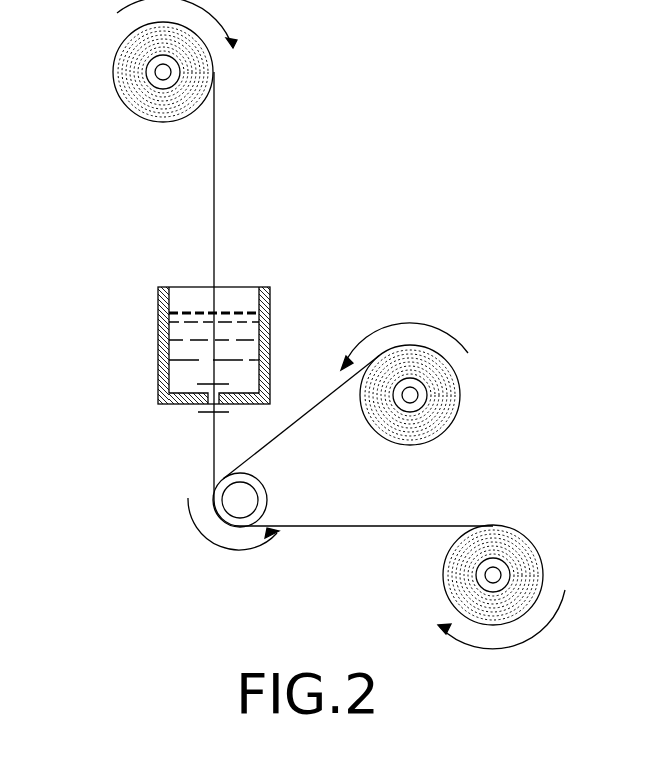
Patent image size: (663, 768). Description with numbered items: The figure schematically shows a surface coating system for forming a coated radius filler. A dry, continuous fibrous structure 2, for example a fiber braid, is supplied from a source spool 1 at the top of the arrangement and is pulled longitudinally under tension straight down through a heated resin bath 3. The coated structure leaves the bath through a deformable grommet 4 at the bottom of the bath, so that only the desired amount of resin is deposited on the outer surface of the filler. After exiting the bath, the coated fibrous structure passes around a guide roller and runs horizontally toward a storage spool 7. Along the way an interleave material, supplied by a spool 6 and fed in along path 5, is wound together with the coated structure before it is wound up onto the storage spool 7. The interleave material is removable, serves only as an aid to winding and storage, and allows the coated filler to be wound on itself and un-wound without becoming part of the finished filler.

The source spool 1 is at (216, 141).
The fibrous structure 2 is at (128, 56).
The heated resin bath 3 is at (159, 308).
The deformable grommet 4 is at (200, 411).
The second web 5 is at (313, 408).
The spool 6 is at (448, 395).
The storage spool 7 is at (527, 556).